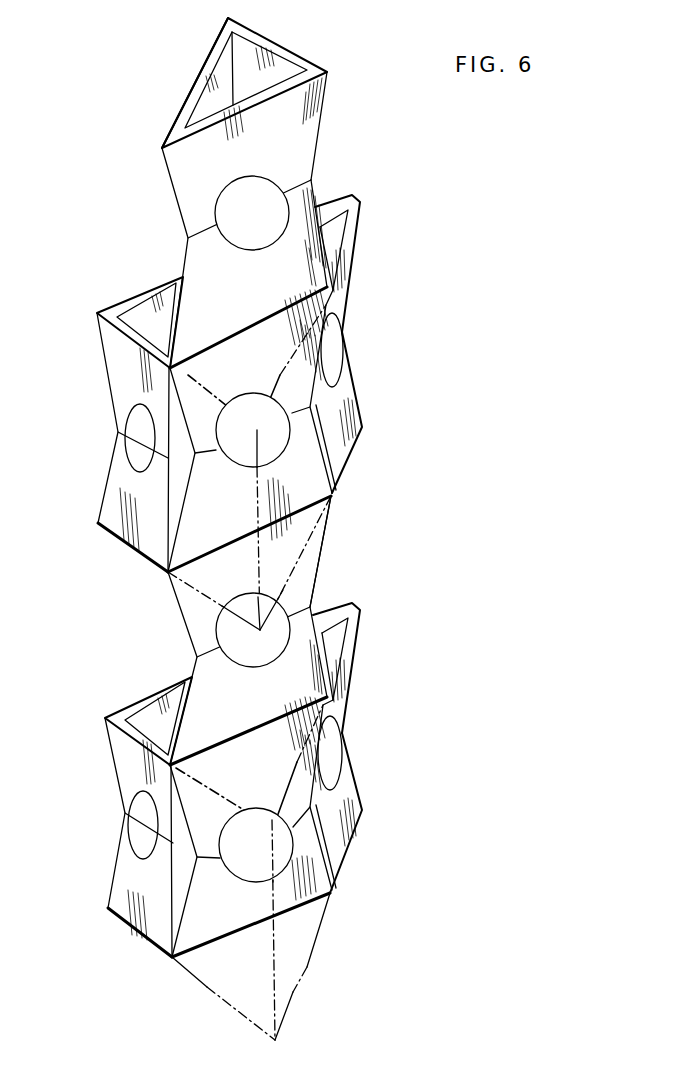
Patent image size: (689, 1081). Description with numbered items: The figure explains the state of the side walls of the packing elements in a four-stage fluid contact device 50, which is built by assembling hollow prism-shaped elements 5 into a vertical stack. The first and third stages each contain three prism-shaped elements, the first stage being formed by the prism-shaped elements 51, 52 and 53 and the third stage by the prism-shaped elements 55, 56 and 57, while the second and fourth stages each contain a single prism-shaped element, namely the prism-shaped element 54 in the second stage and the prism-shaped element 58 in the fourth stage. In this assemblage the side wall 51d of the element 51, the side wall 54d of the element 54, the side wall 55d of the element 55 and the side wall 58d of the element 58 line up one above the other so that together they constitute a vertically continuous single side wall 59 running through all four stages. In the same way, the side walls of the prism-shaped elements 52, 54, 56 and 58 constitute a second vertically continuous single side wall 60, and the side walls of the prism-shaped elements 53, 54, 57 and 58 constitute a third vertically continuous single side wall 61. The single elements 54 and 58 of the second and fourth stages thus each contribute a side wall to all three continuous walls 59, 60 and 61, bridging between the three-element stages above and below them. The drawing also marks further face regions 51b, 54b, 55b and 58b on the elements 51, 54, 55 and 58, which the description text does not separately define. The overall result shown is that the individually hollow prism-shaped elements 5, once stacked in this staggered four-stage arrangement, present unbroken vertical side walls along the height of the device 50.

The hollow prism-shaped element 5 is at (315, 556).
The four-stage fluid contact device 50 is at (499, 179).
The prism-shaped element 51 is at (307, 770).
The face of module 51 51b is at (274, 856).
The side wall 51d is at (277, 772).
The prism-shaped element 52 is at (125, 763).
The prism-shaped element 53 is at (347, 673).
The prism-shaped element 54 is at (180, 615).
The face of module 54 54b is at (279, 657).
The side wall 54d is at (265, 706).
The prism-shaped element 55 is at (323, 326).
The face of module 55 55b is at (275, 447).
The side wall 55d is at (270, 373).
The prism-shaped element 56 is at (103, 365).
The prism-shaped element 57 is at (357, 258).
The prism-shaped element 58 is at (170, 182).
The face of module 58 58b is at (275, 226).
The side wall 58d is at (277, 293).
The vertically continuous single side wall 59 is at (293, 130).
The vertically continuous single side wall 60 is at (162, 98).
The vertically continuous single side wall 61 is at (318, 45).